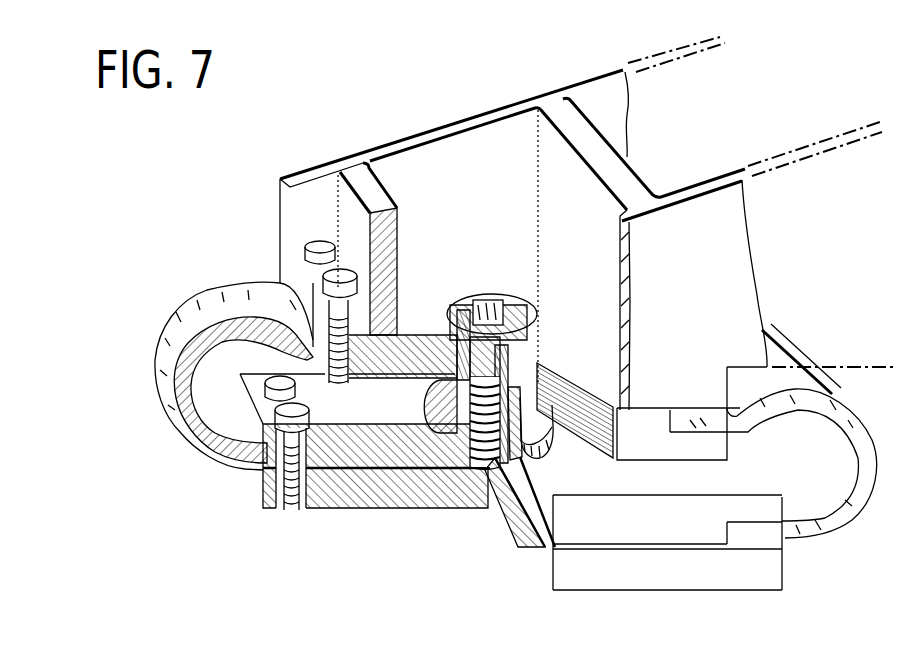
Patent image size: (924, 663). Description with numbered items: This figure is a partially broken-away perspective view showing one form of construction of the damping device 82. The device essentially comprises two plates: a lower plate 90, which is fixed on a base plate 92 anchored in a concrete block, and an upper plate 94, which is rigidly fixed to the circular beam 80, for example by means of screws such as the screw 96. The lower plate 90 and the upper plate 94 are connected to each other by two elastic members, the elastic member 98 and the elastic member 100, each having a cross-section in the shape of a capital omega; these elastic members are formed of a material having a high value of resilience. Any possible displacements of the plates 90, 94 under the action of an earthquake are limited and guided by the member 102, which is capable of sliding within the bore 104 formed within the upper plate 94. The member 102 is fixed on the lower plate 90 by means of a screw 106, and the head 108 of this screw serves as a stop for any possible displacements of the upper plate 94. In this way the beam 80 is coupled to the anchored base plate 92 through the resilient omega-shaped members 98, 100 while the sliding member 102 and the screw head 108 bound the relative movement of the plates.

The circular beam 80 is at (727, 200).
The damping device 82 is at (138, 408).
The lower plate 90 is at (533, 545).
The base plate 92 is at (770, 570).
The upper plate 94 is at (648, 435).
The screw 96 is at (307, 245).
The elastic member 98 is at (863, 457).
The elastic member 100 is at (212, 445).
The member 102 is at (407, 423).
The bore 104 is at (428, 345).
The screw 106 is at (467, 467).
The head 108 is at (468, 292).